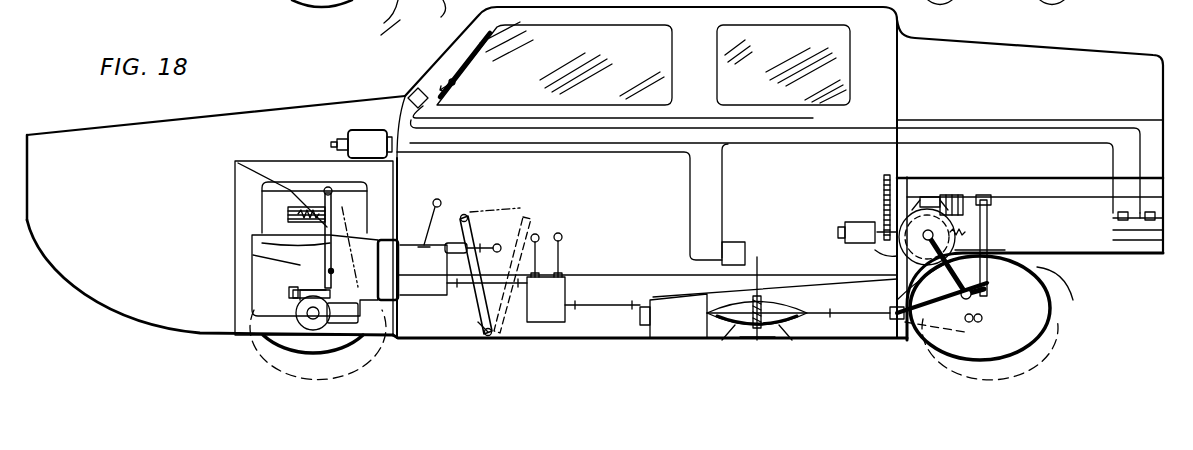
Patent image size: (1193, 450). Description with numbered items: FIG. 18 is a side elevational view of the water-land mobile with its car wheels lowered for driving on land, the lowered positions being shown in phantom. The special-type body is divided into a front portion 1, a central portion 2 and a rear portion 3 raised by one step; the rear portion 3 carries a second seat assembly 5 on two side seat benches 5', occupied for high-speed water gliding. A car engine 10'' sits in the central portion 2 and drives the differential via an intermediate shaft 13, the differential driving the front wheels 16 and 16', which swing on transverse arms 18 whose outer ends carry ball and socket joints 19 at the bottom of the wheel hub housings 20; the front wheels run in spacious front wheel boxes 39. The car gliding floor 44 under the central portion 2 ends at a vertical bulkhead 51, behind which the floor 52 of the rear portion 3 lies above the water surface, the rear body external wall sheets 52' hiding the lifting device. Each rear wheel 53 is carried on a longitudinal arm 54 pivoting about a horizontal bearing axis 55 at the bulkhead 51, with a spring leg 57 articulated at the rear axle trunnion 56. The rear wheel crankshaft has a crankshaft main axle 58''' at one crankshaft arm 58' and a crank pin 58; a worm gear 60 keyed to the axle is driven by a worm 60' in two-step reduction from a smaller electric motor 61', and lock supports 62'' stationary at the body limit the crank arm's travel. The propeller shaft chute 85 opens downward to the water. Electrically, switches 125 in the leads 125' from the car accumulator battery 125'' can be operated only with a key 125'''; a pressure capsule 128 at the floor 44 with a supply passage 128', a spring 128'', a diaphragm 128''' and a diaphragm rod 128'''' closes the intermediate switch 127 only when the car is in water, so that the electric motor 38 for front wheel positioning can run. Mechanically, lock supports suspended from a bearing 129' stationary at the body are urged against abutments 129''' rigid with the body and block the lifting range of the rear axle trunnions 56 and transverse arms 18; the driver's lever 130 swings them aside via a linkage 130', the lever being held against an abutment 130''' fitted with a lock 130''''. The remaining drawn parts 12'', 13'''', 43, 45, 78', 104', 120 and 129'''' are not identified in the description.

The front portion 1 is at (74, 171).
The central portion 2 is at (654, 191).
The rear portion 3 is at (1131, 96).
The second seat assembly 5 is at (1030, 172).
The side seat benches 5' is at (1132, 249).
The car engine 10'' is at (282, 267).
The hull bottom 12'' is at (210, 297).
The intermediate shaft 13 is at (382, 11).
The wheel 13'''' is at (735, 24).
The front wheel 16 is at (283, 345).
The front wheel 16' is at (279, 6).
The transverse arm 18 is at (330, 287).
The ball and socket joint 19 is at (292, 304).
The wheel hub housing 20 is at (300, 268).
The electric motor 38 is at (370, 143).
The front wheel box 39 is at (247, 186).
The lever pivot 43 is at (478, 322).
The car gliding floor 44 is at (553, 341).
The suspension arm 45 is at (398, 24).
The vertical bulkhead 51 is at (893, 330).
The floor 52 is at (1125, 293).
The rear body external wall sheets 52' is at (1111, 230).
The rear wheel 53 is at (933, 345).
The longitudinal arm 54 is at (984, 318).
The horizontal bearing axis 55 is at (892, 312).
The rear axle trunnion 56 is at (985, 318).
The spring leg 57 is at (985, 291).
The crank pin 58 is at (851, 250).
The crankshaft arm 58' is at (853, 206).
The crankshaft main axle 58''' is at (944, 174).
The worm gear 60 is at (921, 129).
The worm 60' is at (944, 130).
The electric motor 61' is at (832, 227).
The lock supports 62'' is at (965, 191).
The drive shaft 78' is at (606, 338).
The shaft chute 85 is at (713, 293).
The gearbox 104' is at (554, 254).
The clutch housing 120 is at (412, 270).
The switch 125 is at (487, 65).
The lead 125' is at (775, 119).
The car accumulator battery 125'' is at (1143, 265).
The key 125''' is at (480, 72).
The intermediate switch 127 is at (735, 242).
The pressure capsule 128 is at (737, 337).
The supply passage 128' is at (751, 353).
The spring 128'' is at (675, 316).
The diaphragm 128''' is at (772, 345).
The diaphragm rod 128'''' is at (771, 258).
The bearing 129' is at (1010, 167).
The abutment 129''' is at (247, 182).
The control line 129'''' is at (1016, 173).
The lever 130 is at (490, 256).
The linkage 130' is at (741, 270).
The abutment 130''' is at (453, 207).
The lock 130'''' is at (514, 243).